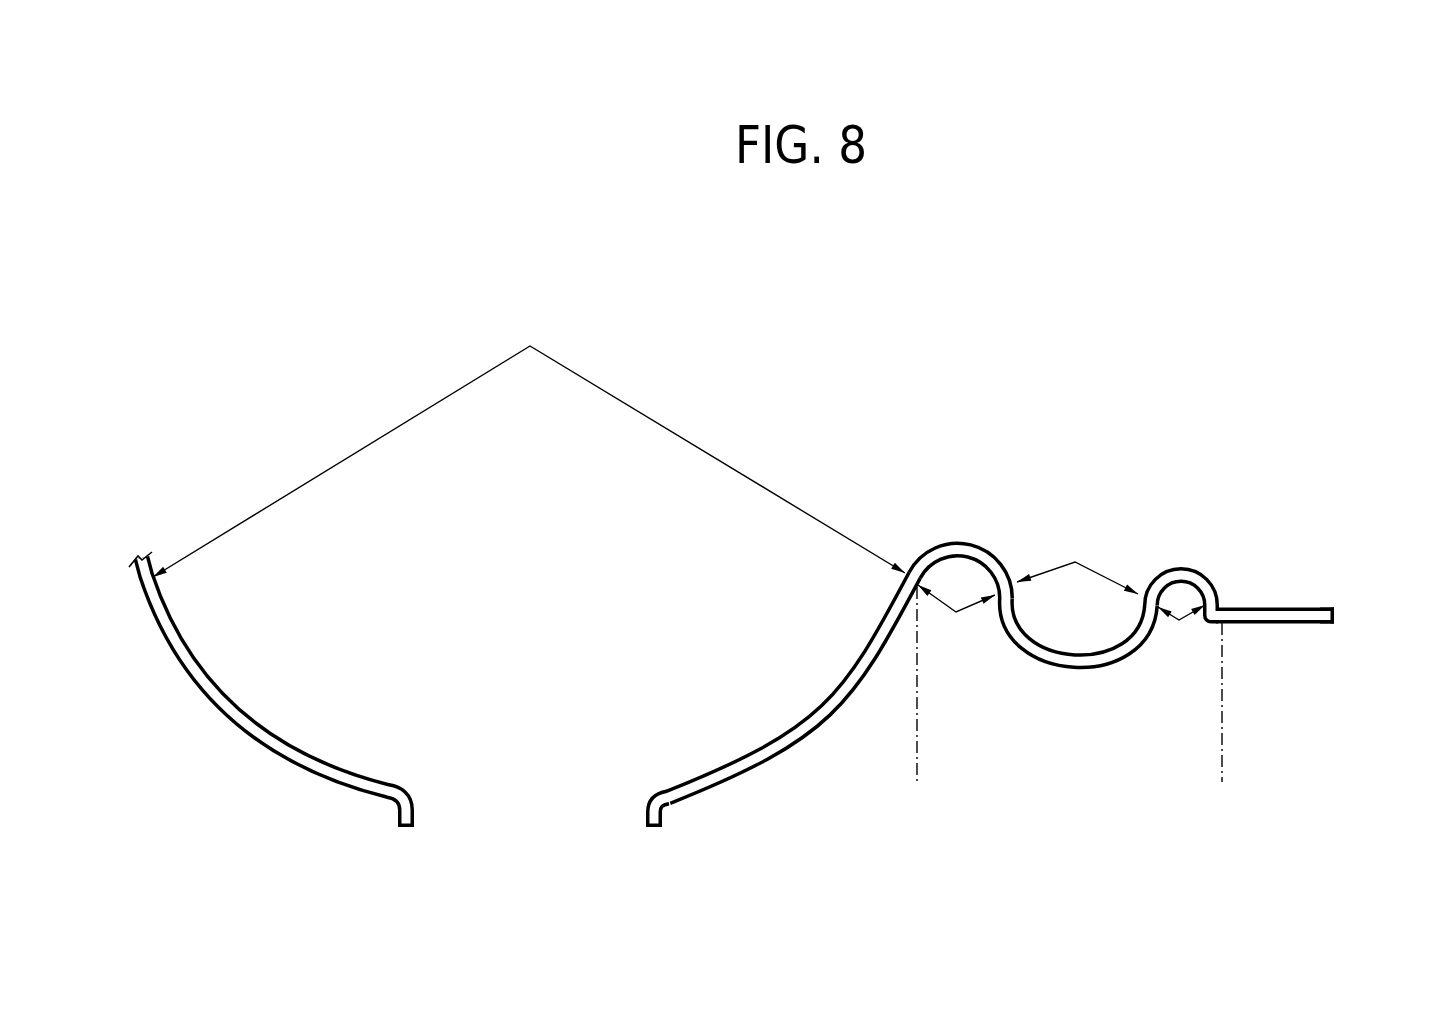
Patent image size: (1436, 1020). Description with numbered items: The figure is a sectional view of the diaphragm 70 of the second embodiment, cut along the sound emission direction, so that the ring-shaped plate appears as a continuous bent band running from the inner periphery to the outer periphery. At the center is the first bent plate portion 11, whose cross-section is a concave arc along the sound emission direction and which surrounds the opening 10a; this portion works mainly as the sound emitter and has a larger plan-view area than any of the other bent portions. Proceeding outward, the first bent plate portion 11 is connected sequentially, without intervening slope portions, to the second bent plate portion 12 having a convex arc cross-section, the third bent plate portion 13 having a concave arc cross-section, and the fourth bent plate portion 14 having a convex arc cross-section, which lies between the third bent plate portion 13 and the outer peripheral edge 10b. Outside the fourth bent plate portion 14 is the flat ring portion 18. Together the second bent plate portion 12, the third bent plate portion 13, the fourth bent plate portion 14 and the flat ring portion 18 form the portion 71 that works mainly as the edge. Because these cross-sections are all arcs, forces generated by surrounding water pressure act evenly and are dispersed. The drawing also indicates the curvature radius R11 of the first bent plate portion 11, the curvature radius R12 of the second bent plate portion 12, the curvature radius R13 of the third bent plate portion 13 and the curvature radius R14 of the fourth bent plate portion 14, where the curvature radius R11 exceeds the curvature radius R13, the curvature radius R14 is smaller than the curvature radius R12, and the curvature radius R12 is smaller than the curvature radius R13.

The diaphragm 70 is at (862, 328).
The portion 71 is at (1068, 650).
The first bent plate portion 11 is at (322, 777).
The second bent plate portion 12 is at (955, 545).
The third bent plate portion 13 is at (1073, 668).
The fourth bent plate portion 14 is at (1178, 568).
The flat ring portion 18 is at (1334, 628).
The opening 10a is at (648, 797).
The outer peripheral edge 10b is at (1337, 612).
The curvature radius of the first bent plate portion R11 is at (333, 467).
The curvature radius of the second bent plate portion R12 is at (945, 613).
The curvature radius of the third bent plate portion R13 is at (1052, 567).
The curvature radius of the fourth bent plate portion R14 is at (1179, 624).